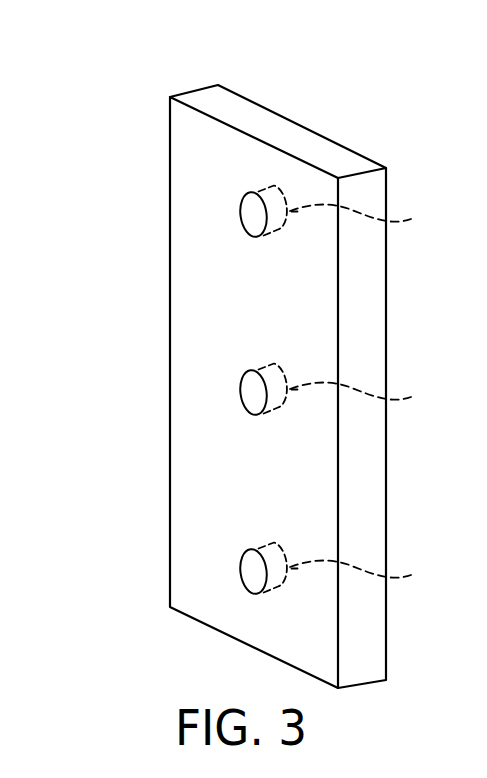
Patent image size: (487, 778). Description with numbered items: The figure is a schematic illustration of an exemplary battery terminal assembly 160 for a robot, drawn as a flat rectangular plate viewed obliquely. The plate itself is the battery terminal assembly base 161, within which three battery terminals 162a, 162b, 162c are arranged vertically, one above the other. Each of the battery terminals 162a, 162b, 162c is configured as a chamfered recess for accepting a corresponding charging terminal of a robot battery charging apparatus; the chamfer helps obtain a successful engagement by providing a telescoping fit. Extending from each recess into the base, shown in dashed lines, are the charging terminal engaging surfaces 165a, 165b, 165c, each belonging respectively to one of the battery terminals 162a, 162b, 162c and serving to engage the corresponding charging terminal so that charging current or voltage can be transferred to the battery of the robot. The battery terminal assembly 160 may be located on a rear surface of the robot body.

The battery terminal assembly 160 is at (123, 107).
The battery terminal assembly base 161 is at (290, 130).
The battery terminal 162a is at (244, 240).
The battery terminal 162b is at (242, 418).
The battery terminal 162c is at (243, 556).
The charging terminal engaging surface 165a is at (385, 215).
The charging terminal engaging surface 165b is at (385, 395).
The charging terminal engaging surface 165c is at (385, 577).